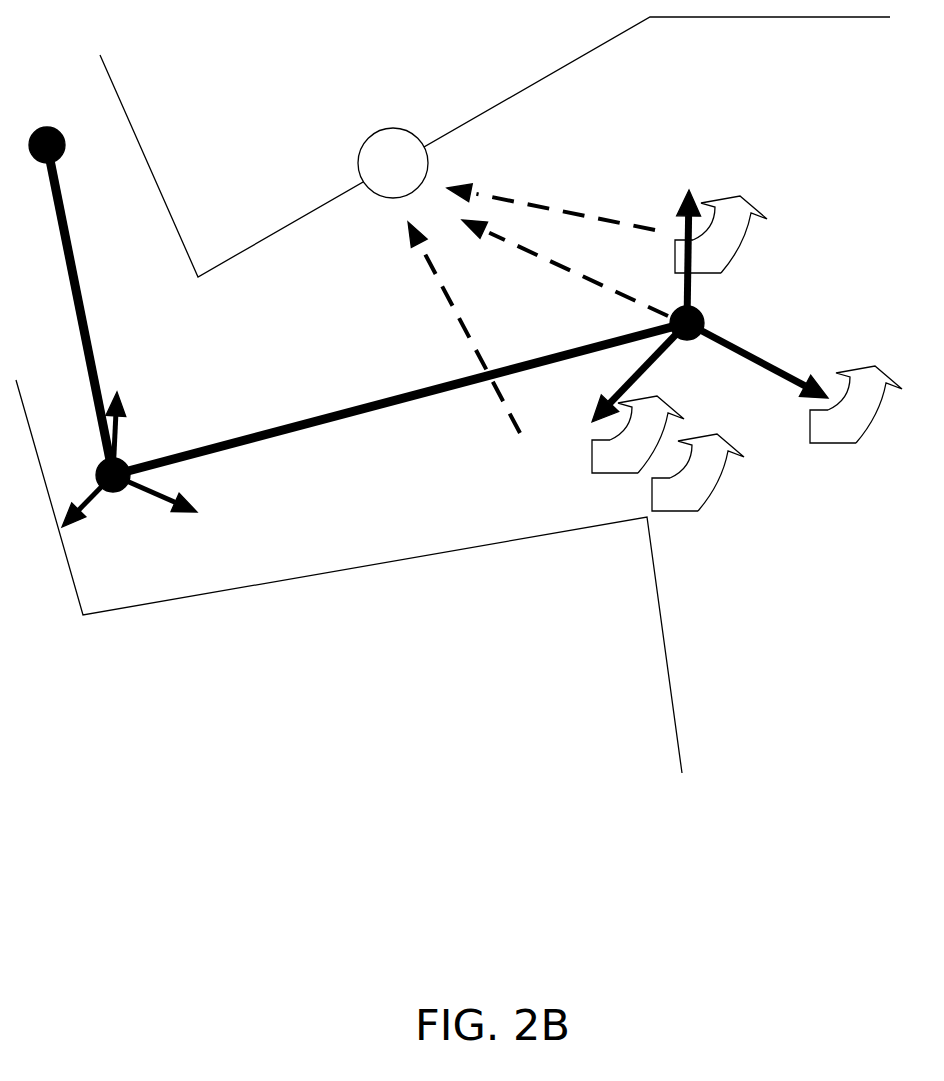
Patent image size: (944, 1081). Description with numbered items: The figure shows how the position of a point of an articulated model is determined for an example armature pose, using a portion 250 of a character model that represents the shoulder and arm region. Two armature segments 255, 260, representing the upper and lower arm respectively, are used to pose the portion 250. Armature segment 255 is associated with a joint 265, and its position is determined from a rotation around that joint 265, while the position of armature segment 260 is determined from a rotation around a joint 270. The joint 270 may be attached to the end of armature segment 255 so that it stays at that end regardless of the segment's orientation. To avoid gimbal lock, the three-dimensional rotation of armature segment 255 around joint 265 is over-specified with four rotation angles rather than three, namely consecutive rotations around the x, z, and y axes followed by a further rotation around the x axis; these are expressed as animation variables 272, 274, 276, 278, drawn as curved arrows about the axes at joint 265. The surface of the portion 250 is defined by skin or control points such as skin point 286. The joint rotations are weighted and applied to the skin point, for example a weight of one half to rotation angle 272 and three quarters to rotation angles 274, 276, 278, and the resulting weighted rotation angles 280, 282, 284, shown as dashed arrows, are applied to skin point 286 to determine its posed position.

The portion of a character model 250 is at (675, 742).
The armature segment 255 is at (290, 432).
The armature segment 260 is at (92, 348).
The joint 265 is at (705, 318).
The joint 270 is at (117, 492).
The animation variable 272 is at (638, 434).
The animation variable 274 is at (856, 404).
The animation variable 276 is at (721, 234).
The animation variable 278 is at (698, 472).
The weighted rotation angle 280 is at (452, 302).
The weighted rotation angle 282 is at (588, 278).
The weighted rotation angle 284 is at (560, 185).
The skin point 286 is at (403, 130).